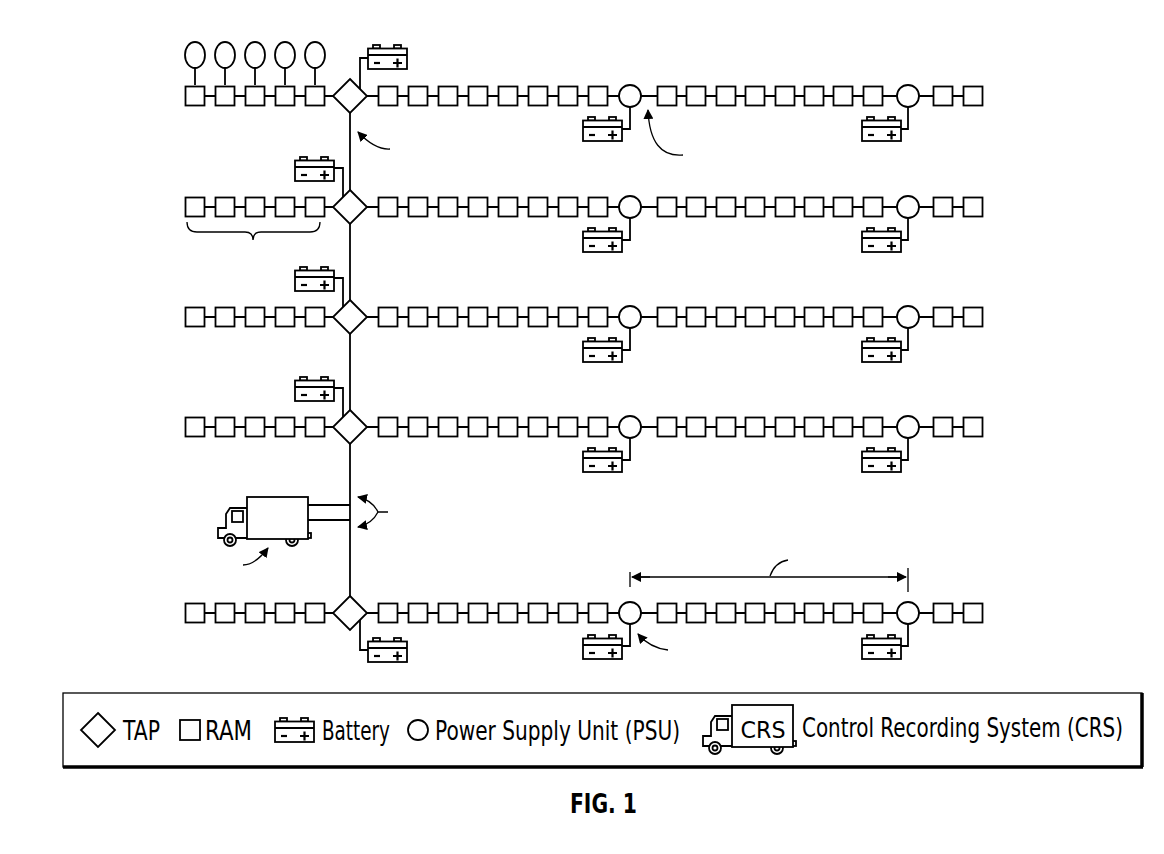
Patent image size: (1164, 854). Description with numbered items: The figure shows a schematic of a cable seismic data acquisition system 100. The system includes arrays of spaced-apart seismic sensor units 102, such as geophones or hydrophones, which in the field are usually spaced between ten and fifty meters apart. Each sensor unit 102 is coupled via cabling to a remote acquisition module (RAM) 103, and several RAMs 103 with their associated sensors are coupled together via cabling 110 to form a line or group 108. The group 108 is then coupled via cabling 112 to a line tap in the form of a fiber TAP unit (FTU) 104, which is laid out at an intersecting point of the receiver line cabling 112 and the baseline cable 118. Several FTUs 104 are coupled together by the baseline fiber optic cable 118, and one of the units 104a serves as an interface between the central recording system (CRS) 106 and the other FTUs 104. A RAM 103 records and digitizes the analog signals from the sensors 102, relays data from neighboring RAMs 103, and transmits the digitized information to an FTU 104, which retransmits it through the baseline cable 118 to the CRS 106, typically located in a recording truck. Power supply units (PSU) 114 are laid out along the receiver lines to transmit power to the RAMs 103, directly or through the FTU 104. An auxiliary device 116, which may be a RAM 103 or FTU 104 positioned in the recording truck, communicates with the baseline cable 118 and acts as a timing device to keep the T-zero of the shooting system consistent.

The cable seismic data acquisition system 100 is at (610, 352).
The seismic sensor unit 102 is at (185, 56).
The remote acquisition module (RAM) 103 is at (186, 97).
The fiber TAP unit (FTU) 104 is at (361, 106).
The interface fiber TAP unit 104a is at (362, 440).
The central recording system (CRS) 106 is at (259, 498).
The group 108 is at (255, 231).
The cabling 110 is at (210, 98).
The cabling (receiver line cable) 112 is at (330, 98).
The power supply unit (PSU) 114 is at (636, 85).
The auxiliary device 116 is at (258, 507).
The baseline cable 118 is at (352, 262).